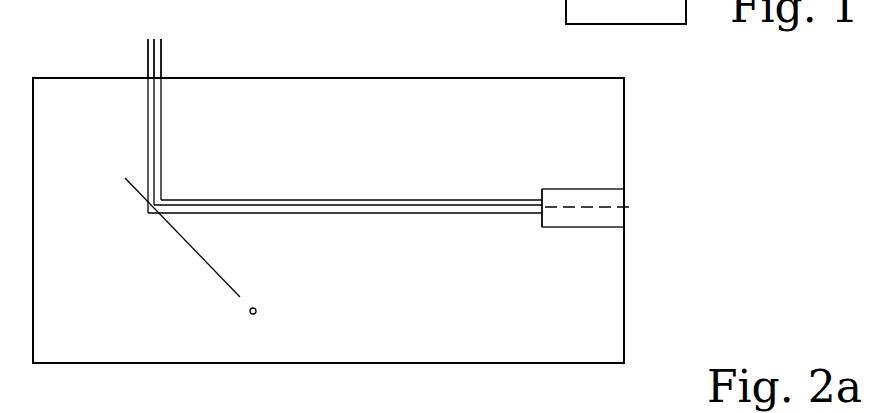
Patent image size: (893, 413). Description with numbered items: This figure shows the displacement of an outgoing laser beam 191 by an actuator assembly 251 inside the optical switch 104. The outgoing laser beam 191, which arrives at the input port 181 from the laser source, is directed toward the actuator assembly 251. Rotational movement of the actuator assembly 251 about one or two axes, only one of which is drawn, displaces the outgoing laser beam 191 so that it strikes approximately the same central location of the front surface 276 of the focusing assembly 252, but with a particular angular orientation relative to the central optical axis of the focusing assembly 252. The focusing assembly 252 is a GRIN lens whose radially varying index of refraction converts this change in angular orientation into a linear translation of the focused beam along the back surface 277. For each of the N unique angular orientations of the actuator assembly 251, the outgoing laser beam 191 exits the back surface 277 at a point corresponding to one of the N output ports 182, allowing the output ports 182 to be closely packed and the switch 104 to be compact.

In FIG. 1, the optical switch 104 is at (338, 20).
In FIG. 2A, the input port 181 is at (162, 77).
In FIG. 2A, the outgoing laser beam 191 is at (150, 60).
In FIG. 2A, the actuator assembly 251 is at (172, 226).
In FIG. 2A, the focusing assembly 252 is at (567, 221).
In FIG. 2A, the front surface 276 is at (540, 197).
In FIG. 2A, the back surface 277 is at (626, 199).
In FIG. 2A, the output ports 182 is at (627, 207).